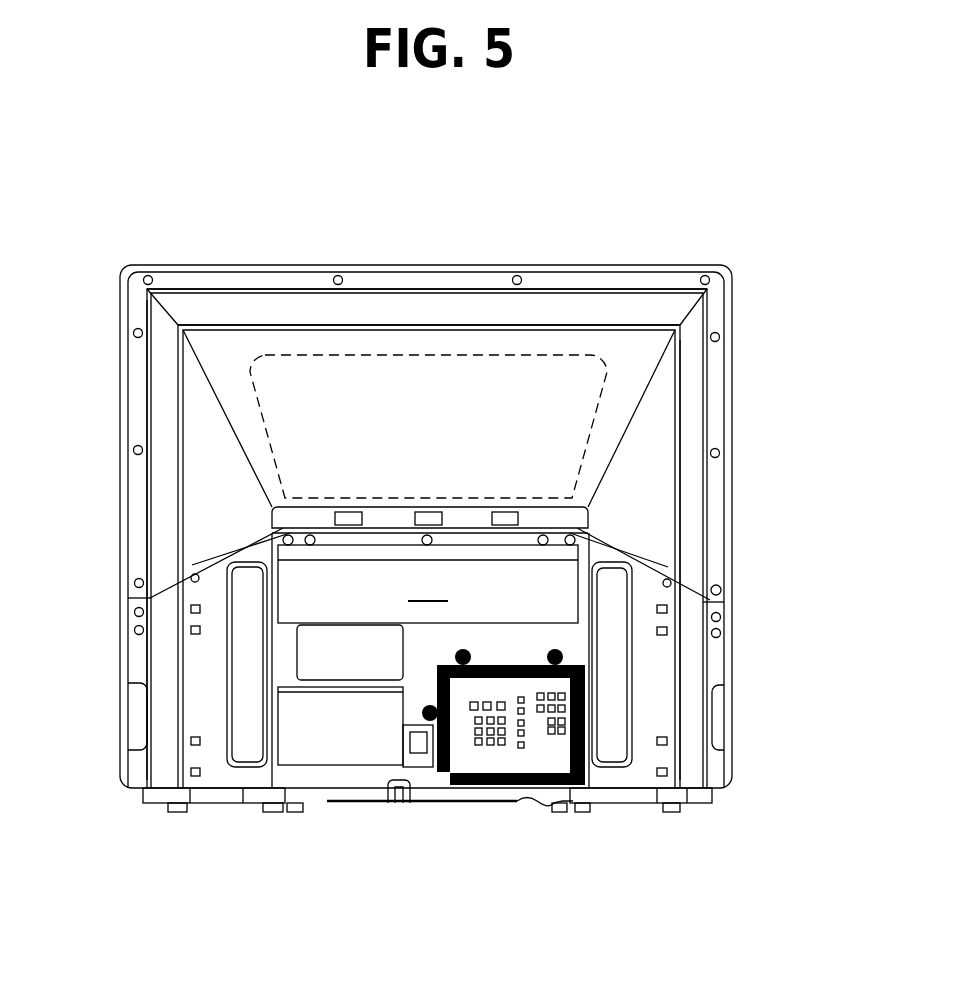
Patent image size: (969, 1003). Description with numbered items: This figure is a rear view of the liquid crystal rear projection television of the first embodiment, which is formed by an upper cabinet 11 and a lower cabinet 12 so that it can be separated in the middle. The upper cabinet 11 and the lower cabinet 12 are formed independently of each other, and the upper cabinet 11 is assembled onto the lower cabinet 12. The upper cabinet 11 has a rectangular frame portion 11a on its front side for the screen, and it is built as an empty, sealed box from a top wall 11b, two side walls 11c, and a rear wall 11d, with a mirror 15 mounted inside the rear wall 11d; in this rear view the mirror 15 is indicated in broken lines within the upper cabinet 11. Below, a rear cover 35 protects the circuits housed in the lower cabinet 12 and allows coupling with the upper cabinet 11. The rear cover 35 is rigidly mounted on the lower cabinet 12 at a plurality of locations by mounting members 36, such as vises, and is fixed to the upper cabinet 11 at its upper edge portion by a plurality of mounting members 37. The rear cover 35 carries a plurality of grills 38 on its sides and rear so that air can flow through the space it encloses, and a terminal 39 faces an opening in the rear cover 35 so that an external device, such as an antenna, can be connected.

The upper cabinet 11 is at (759, 338).
The rectangular frame portion 11a is at (588, 263).
The top wall 11b is at (262, 312).
The side walls 11c is at (160, 400).
The rear wall 11d is at (608, 415).
The lower cabinet 12 is at (745, 687).
The mirror 15 is at (452, 358).
The rear cover 35 is at (660, 707).
The mounting member 36 is at (191, 609).
The mounting members 37 is at (285, 529).
The grills 38 is at (253, 755).
The terminal 39 is at (490, 768).